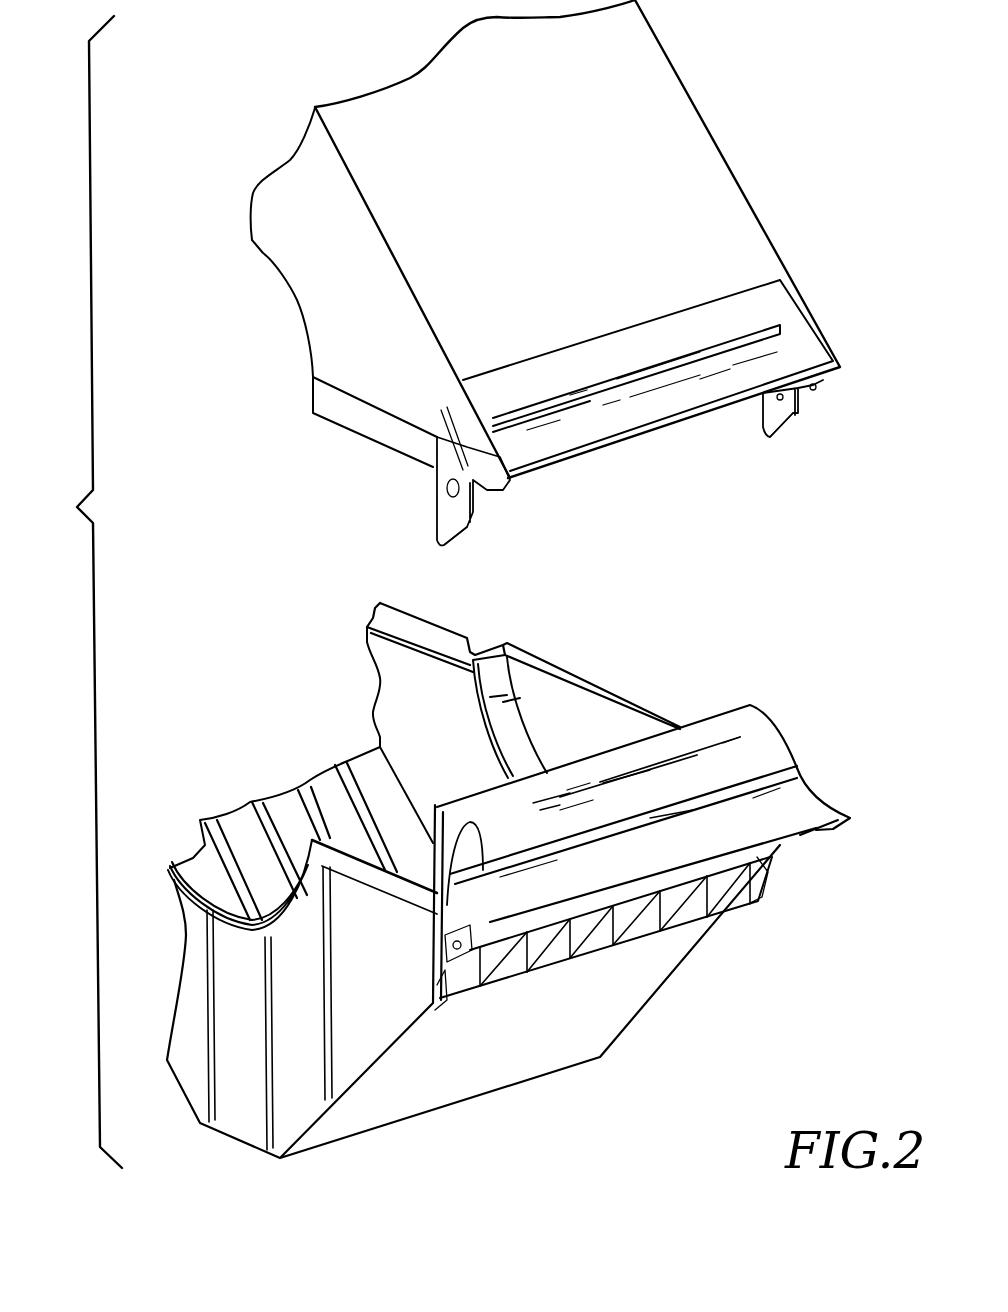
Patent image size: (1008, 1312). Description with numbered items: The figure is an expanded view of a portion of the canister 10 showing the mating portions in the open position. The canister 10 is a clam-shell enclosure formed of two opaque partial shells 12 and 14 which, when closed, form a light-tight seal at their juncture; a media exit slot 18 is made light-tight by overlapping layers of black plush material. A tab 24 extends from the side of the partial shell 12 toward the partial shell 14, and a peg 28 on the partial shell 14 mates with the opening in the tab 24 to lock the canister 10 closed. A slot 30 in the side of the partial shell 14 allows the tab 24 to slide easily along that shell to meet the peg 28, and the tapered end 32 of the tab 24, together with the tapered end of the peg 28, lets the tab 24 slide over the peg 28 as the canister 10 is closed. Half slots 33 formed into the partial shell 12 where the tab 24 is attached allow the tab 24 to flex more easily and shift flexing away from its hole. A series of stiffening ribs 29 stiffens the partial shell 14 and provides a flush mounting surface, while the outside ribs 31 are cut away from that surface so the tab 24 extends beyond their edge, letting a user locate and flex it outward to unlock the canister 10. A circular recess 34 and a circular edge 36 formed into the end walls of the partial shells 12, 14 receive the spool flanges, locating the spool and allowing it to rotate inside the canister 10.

The canister 10 is at (75, 592).
The partial shell 12 is at (723, 160).
The partial shell 14 is at (677, 987).
The media exit slot 18 is at (600, 450).
The tab 24 is at (435, 508).
The peg 28 is at (442, 950).
The stiffening ribs 29 is at (507, 960).
The slot 30 is at (643, 813).
The outside ribs 31 is at (767, 883).
The tapered end 32 is at (460, 533).
The half slots 33 is at (455, 450).
The circular recess 34 is at (503, 702).
The circular edge 36 is at (302, 340).